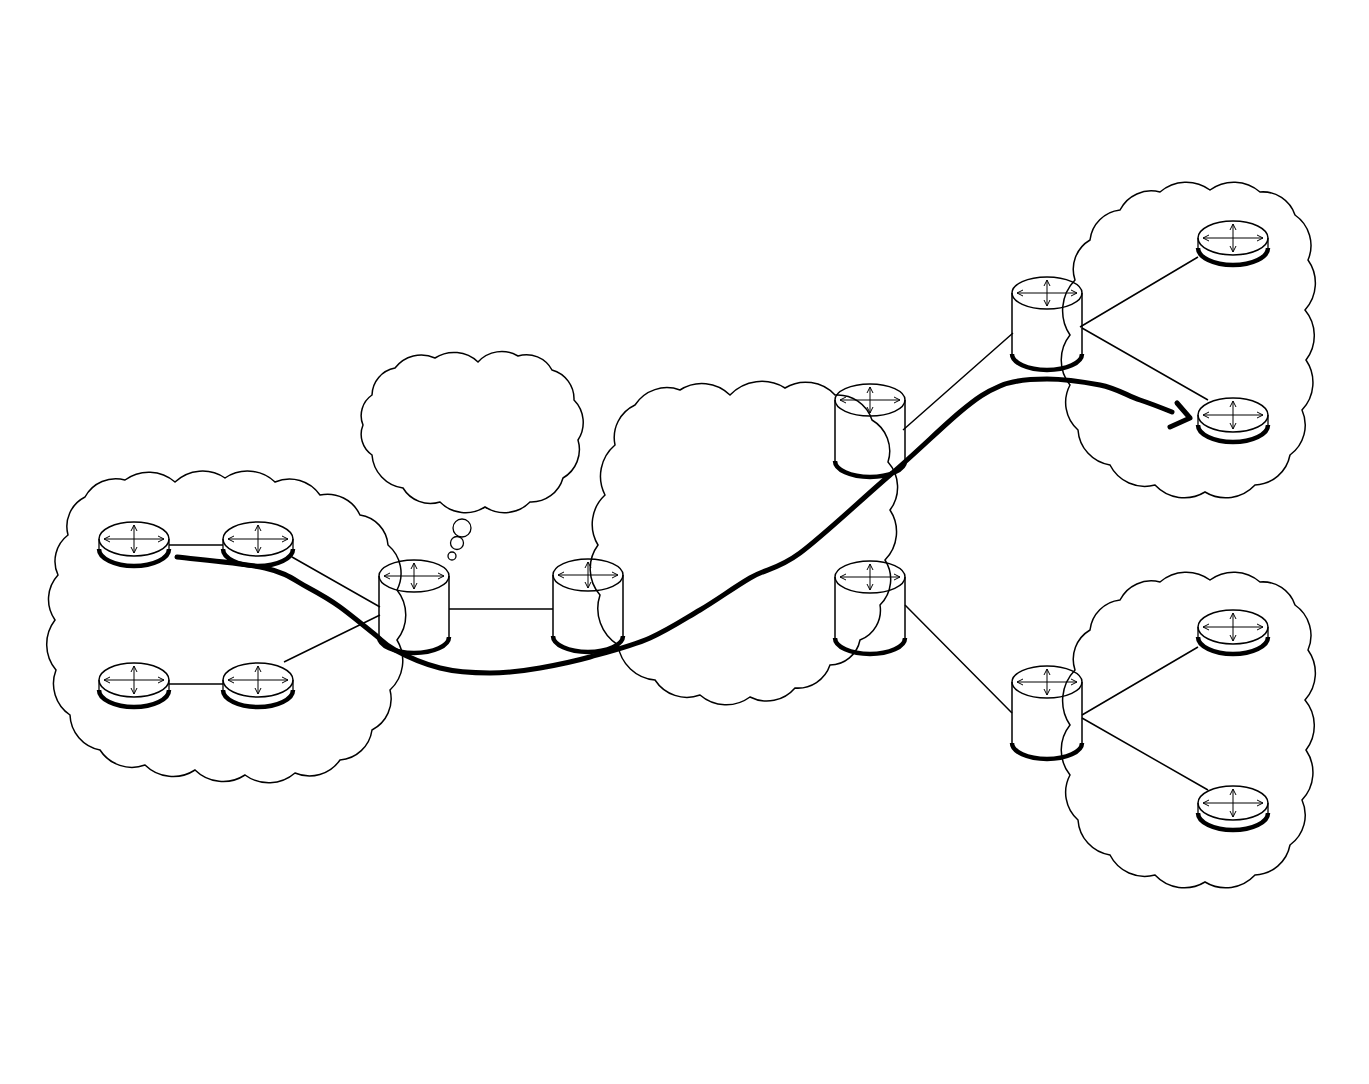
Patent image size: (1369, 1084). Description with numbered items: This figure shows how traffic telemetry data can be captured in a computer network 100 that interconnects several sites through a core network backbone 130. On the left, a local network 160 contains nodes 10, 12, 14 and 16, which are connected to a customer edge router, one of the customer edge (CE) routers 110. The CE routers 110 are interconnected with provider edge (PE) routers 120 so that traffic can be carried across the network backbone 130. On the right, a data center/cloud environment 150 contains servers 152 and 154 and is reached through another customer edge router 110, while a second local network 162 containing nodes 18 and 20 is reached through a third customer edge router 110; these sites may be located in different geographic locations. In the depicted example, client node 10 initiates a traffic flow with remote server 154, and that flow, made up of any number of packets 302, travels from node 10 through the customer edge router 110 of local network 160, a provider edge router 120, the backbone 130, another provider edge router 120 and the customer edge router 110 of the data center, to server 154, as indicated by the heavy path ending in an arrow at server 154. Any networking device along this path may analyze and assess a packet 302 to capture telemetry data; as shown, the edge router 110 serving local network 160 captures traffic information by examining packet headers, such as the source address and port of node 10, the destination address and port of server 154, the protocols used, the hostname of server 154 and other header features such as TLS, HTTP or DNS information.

The computer network 100 is at (1273, 90).
The client node 10 is at (134, 562).
The node 12 is at (258, 562).
The node 14 is at (134, 706).
The node 16 is at (258, 706).
The node 18 is at (1233, 826).
The node 20 is at (1233, 650).
The customer edge (CE) router 110 is at (398, 648).
The provider edge (PE) router 120 is at (572, 647).
The network backbone 130 is at (716, 548).
The data center/cloud environment 150 is at (1143, 205).
The server 152 is at (1233, 262).
The server 154 is at (1233, 437).
The local network 160 is at (280, 785).
The local network 162 is at (1063, 812).
The packet 302 is at (529, 690).